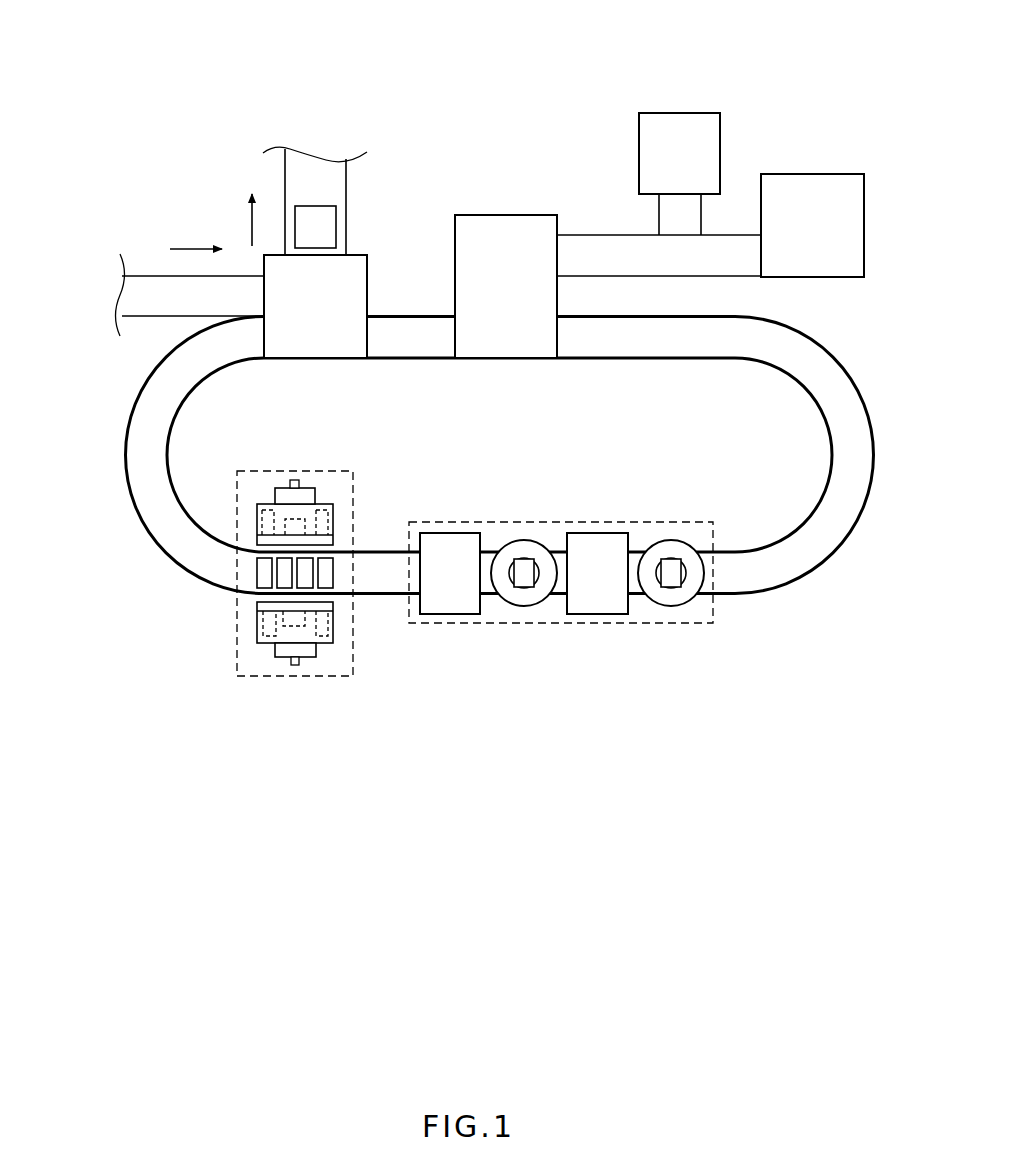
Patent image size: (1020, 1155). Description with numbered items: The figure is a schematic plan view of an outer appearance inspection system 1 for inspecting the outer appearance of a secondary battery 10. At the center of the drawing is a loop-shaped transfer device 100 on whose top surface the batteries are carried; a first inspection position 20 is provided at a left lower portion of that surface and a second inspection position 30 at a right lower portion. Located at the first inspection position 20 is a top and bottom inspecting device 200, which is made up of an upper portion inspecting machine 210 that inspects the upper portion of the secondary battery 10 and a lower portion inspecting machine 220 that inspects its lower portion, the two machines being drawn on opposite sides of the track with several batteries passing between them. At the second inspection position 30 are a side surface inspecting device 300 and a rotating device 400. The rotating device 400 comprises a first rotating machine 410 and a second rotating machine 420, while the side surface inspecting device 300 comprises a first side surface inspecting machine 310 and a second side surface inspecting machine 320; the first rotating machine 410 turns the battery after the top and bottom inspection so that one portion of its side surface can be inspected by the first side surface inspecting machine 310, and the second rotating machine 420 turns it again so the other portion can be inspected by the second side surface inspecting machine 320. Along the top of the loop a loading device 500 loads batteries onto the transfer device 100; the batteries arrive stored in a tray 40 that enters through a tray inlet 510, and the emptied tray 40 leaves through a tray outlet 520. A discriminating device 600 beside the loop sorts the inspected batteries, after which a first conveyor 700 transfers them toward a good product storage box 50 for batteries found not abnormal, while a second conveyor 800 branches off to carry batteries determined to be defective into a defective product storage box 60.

The outer appearance inspection system 1 is at (409, 67).
The transfer device 100 is at (146, 418).
The secondary battery 10 is at (325, 573).
The first inspection position 20 is at (294, 471).
The top and bottom inspecting device 200 is at (185, 572).
The upper portion inspecting machine 210 is at (257, 518).
The lower portion inspecting machine 220 is at (260, 630).
The second inspection position 30 is at (463, 522).
The side surface inspecting device 300 is at (597, 515).
The first side surface inspecting machine 310 is at (533, 553).
The second side surface inspecting machine 320 is at (670, 548).
The rotating device 400 is at (524, 632).
The first rotating machine 410 is at (462, 592).
The second rotating machine 420 is at (583, 598).
The tray 40 is at (319, 225).
The loading device 500 is at (336, 280).
The tray inlet 510 is at (157, 283).
The tray outlet 520 is at (324, 177).
The discriminating device 600 is at (473, 235).
The first conveyor 700 is at (583, 242).
The second conveyor 800 is at (668, 213).
The defective product storage box 60 is at (700, 135).
The good product storage box 50 is at (839, 207).